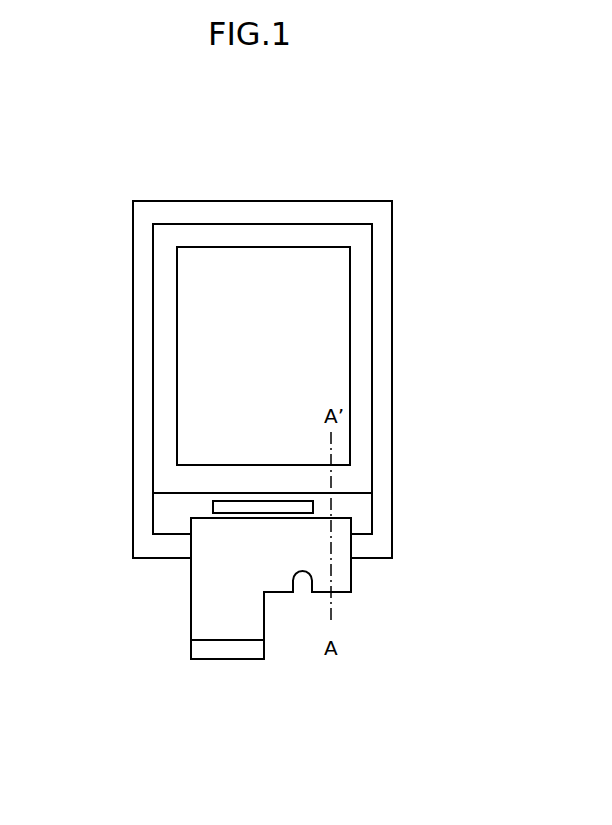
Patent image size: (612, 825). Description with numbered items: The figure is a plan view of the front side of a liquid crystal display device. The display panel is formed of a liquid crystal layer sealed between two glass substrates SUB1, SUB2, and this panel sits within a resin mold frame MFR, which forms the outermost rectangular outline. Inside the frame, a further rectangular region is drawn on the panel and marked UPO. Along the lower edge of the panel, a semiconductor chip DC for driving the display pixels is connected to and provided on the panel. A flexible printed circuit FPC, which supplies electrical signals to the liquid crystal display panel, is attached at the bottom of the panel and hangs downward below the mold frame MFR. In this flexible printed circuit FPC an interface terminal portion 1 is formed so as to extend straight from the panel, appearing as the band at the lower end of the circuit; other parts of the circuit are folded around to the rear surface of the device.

The mold frame MFR is at (180, 215).
The upper polarizer UPO is at (317, 270).
The glass substrate SUB1 is at (351, 333).
The glass substrate SUB2 is at (348, 508).
The semiconductor chip DC is at (213, 507).
The flexible printed circuit FPC is at (220, 592).
The interface terminal portion 1 is at (232, 648).